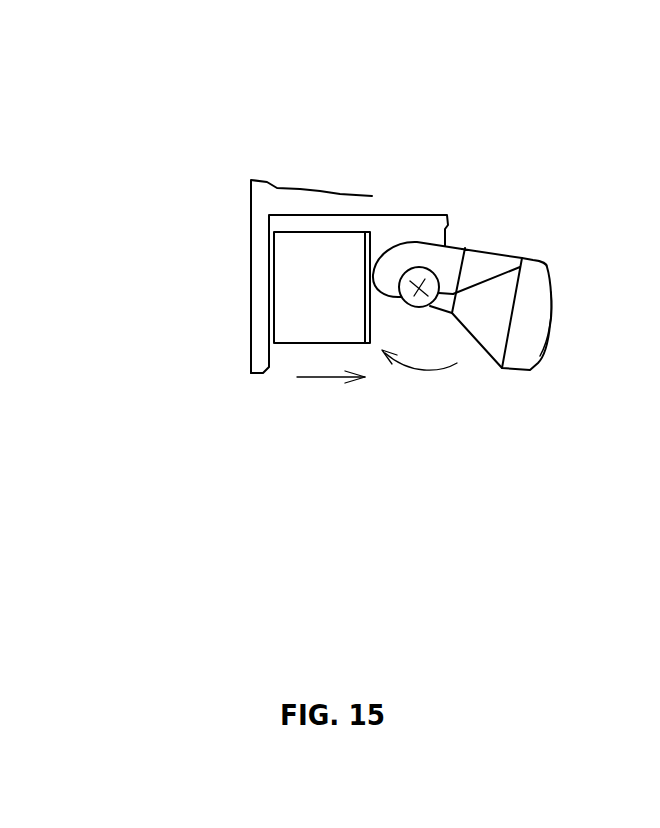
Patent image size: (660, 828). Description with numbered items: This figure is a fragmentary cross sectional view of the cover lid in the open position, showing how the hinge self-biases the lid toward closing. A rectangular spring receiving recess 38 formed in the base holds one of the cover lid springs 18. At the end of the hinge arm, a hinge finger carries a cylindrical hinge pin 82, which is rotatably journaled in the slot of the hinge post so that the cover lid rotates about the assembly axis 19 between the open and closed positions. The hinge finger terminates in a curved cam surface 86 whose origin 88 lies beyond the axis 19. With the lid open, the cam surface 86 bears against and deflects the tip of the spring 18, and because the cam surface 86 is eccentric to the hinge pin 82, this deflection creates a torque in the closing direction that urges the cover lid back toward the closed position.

The cover lid springs 18 is at (365, 343).
The axis 19 is at (423, 293).
The spring receiving recesses 38 is at (308, 225).
The hinge pins 82 is at (433, 270).
The curved cam surface 86 is at (408, 242).
The origin 88 is at (372, 281).